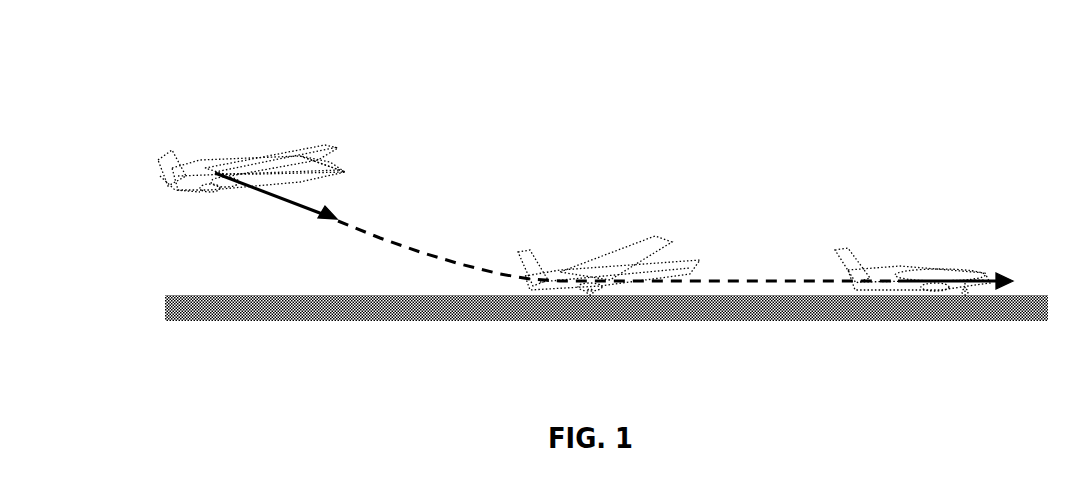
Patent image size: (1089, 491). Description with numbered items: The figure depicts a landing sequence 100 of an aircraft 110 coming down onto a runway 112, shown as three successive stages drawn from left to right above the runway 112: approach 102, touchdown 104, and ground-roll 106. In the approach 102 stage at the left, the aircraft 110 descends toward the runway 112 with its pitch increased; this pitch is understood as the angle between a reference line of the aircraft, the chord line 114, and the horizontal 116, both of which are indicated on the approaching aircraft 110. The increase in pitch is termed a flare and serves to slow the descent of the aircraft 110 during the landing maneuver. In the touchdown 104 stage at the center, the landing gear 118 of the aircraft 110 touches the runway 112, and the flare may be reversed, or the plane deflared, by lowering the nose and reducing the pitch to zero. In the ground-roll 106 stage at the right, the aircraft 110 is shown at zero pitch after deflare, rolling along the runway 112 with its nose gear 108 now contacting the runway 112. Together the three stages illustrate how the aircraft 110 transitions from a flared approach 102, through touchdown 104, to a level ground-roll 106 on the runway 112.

The sequence 100 is at (163, 126).
The approach 102 is at (231, 161).
The touchdown 104 is at (609, 233).
The ground-roll 106 is at (924, 292).
The nose gear 108 is at (965, 290).
The aircraft 110 is at (167, 191).
The runway 112 is at (200, 322).
The chord line 114 is at (338, 147).
The horizontal 116 is at (345, 172).
The landing gear 118 is at (228, 180).